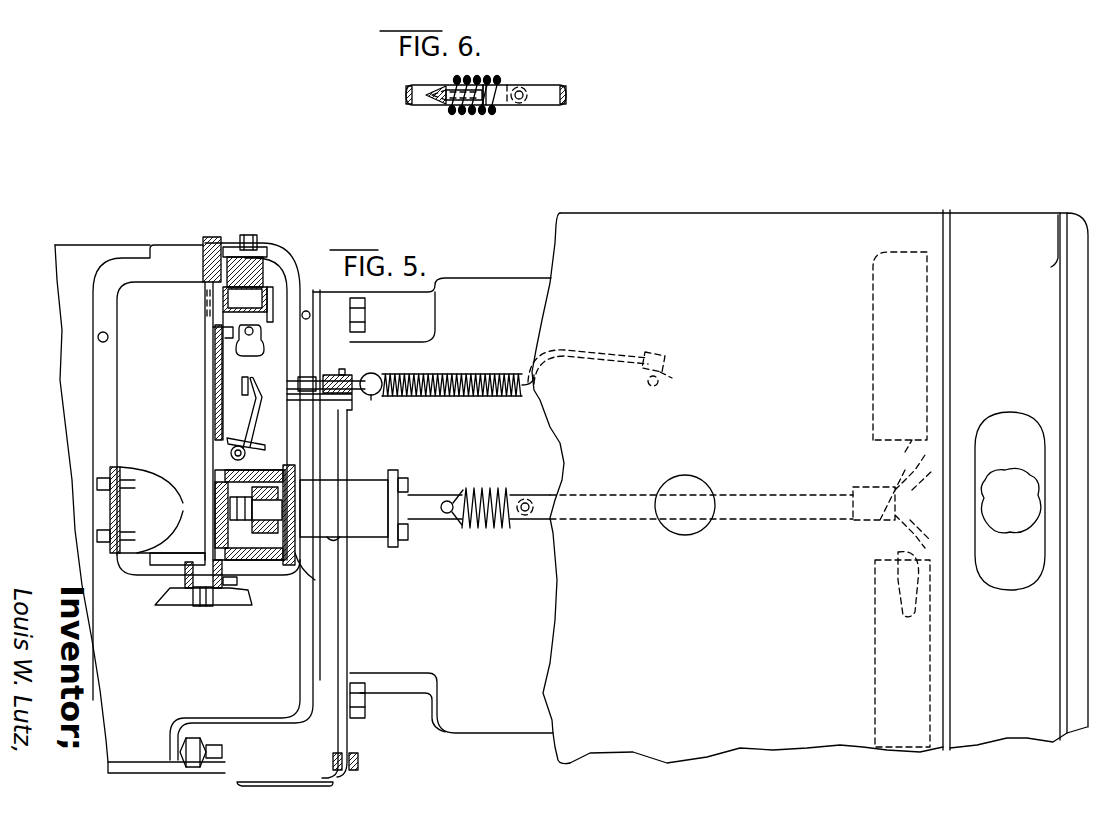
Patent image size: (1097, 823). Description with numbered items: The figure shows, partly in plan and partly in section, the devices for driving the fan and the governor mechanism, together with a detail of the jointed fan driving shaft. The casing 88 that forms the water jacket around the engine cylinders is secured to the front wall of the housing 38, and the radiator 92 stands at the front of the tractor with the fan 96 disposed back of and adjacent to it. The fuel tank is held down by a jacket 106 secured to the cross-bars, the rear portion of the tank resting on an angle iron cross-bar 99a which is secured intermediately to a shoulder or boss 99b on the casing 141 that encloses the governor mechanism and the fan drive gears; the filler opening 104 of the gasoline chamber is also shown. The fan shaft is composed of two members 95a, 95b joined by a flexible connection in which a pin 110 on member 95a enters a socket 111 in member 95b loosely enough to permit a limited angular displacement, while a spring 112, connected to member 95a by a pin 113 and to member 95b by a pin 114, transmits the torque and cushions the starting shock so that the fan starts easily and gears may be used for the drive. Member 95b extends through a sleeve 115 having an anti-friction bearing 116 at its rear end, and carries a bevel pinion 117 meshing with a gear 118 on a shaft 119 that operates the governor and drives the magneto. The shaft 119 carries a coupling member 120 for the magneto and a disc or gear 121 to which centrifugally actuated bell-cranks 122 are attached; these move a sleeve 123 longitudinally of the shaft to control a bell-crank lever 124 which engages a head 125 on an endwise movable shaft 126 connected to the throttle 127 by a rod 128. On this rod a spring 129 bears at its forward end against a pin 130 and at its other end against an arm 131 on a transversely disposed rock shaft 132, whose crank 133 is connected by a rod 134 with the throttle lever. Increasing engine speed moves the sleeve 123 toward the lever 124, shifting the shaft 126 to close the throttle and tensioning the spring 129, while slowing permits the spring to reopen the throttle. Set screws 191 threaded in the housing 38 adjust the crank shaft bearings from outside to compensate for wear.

In FIG. 5, the housing 38 is at (72, 311).
In FIG. 5, the casing 88 is at (516, 290).
In FIG. 5, the radiator 92 is at (1015, 480).
In FIG. 6, the fan shaft member 95a is at (548, 102).
In FIG. 5, the fan shaft member 95a is at (543, 500).
In FIG. 6, the fan shaft member 95b is at (421, 108).
In FIG. 5, the fan shaft member 95b is at (418, 505).
In FIG. 5, the fan 96 is at (880, 352).
In FIG. 5, the angle iron cross-bar 99a is at (110, 498).
In FIG. 5, the shoulder or boss 99b is at (131, 553).
In FIG. 5, the filler opening 104 is at (690, 488).
In FIG. 5, the jacket 106 is at (770, 237).
In FIG. 6, the pin 110 is at (484, 106).
In FIG. 6, the socket 111 is at (442, 101).
In FIG. 6, the spring 112 is at (476, 108).
In FIG. 5, the spring 112 is at (488, 497).
In FIG. 6, the pin 113 is at (526, 90).
In FIG. 5, the pin 113 is at (526, 501).
In FIG. 6, the pin 114 is at (444, 92).
In FIG. 5, the pin 114 is at (448, 500).
In FIG. 5, the sleeve 115 is at (351, 485).
In FIG. 5, the anti-friction bearing 116 is at (284, 540).
In FIG. 5, the bevel pinion 117 is at (263, 546).
In FIG. 5, the gear 118 is at (203, 472).
In FIG. 5, the shaft 119 is at (197, 605).
In FIG. 5, the coupling member 120 is at (164, 606).
In FIG. 5, the disc or gear 121 is at (248, 297).
In FIG. 5, the bell-cranks 122 is at (240, 352).
In FIG. 5, the sleeve 123 is at (216, 364).
In FIG. 5, the bell-crank lever 124 is at (257, 418).
In FIG. 5, the head 125 is at (232, 390).
In FIG. 5, the endwise movable shaft 126 is at (306, 385).
In FIG. 5, the throttle 127 is at (663, 378).
In FIG. 5, the rod 128 is at (374, 376).
In FIG. 5, the spring 129 is at (452, 396).
In FIG. 5, the pin 130 is at (530, 376).
In FIG. 5, the arm 131 is at (374, 396).
In FIG. 5, the rock shaft 132 is at (348, 611).
In FIG. 5, the crank 133 is at (333, 775).
In FIG. 5, the rod 134 is at (247, 783).
In FIG. 5, the casing 141 is at (135, 433).
In FIG. 5, the set screws 191 is at (223, 755).